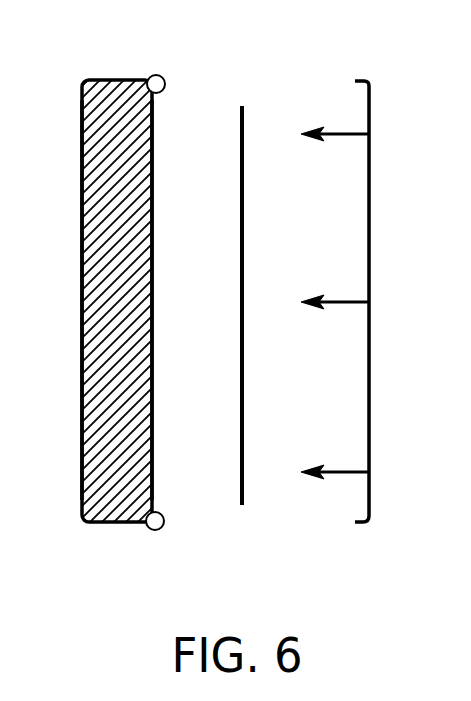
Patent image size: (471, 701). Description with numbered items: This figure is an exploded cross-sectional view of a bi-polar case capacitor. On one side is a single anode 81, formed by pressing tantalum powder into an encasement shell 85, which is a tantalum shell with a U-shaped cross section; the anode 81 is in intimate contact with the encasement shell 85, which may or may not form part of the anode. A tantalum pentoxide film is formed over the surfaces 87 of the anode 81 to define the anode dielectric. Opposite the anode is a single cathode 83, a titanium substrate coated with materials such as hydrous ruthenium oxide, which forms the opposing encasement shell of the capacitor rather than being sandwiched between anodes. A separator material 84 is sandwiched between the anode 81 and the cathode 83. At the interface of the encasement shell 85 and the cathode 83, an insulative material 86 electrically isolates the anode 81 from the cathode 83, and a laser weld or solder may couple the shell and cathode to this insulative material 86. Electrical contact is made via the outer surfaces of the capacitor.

The anode 81 is at (95, 320).
The cathode 83 is at (370, 340).
The separator material 84 is at (244, 488).
The encasement shell 85 is at (82, 478).
The insulative material 86 is at (166, 87).
The surfaces 87 is at (156, 331).